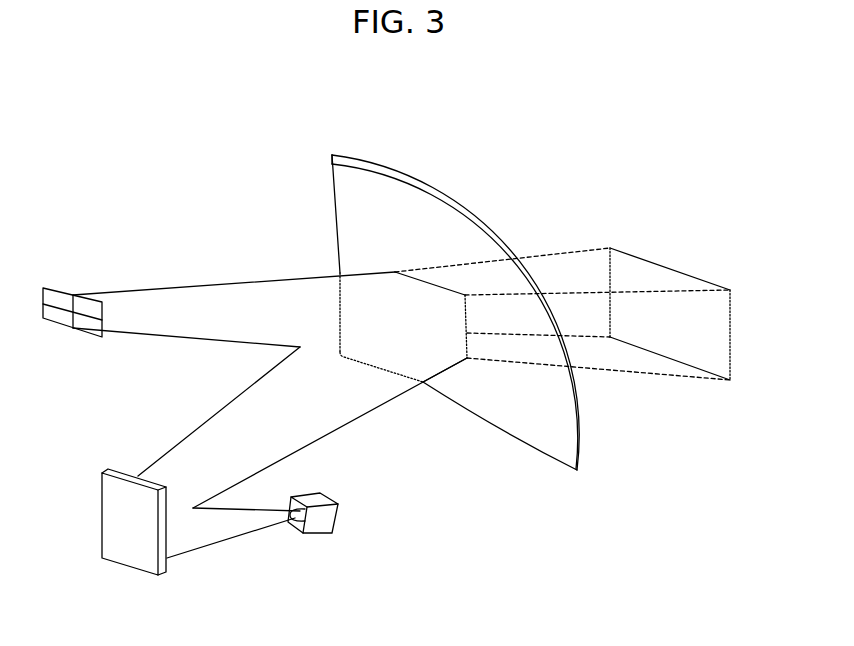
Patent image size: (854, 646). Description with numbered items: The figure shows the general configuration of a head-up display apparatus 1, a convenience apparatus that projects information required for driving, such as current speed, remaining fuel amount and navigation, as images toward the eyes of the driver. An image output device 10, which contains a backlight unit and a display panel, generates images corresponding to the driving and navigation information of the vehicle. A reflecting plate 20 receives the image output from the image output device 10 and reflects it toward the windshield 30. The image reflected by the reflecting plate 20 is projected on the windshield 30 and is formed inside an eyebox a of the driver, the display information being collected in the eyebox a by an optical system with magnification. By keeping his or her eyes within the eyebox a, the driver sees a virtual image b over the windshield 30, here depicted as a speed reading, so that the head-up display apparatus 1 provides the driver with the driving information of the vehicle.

The head-up display apparatus 1 is at (108, 149).
The eyebox a is at (60, 288).
The virtual image b is at (732, 335).
The image output device 10 is at (338, 522).
The reflecting plate 20 is at (127, 552).
The windshield 30 is at (417, 212).